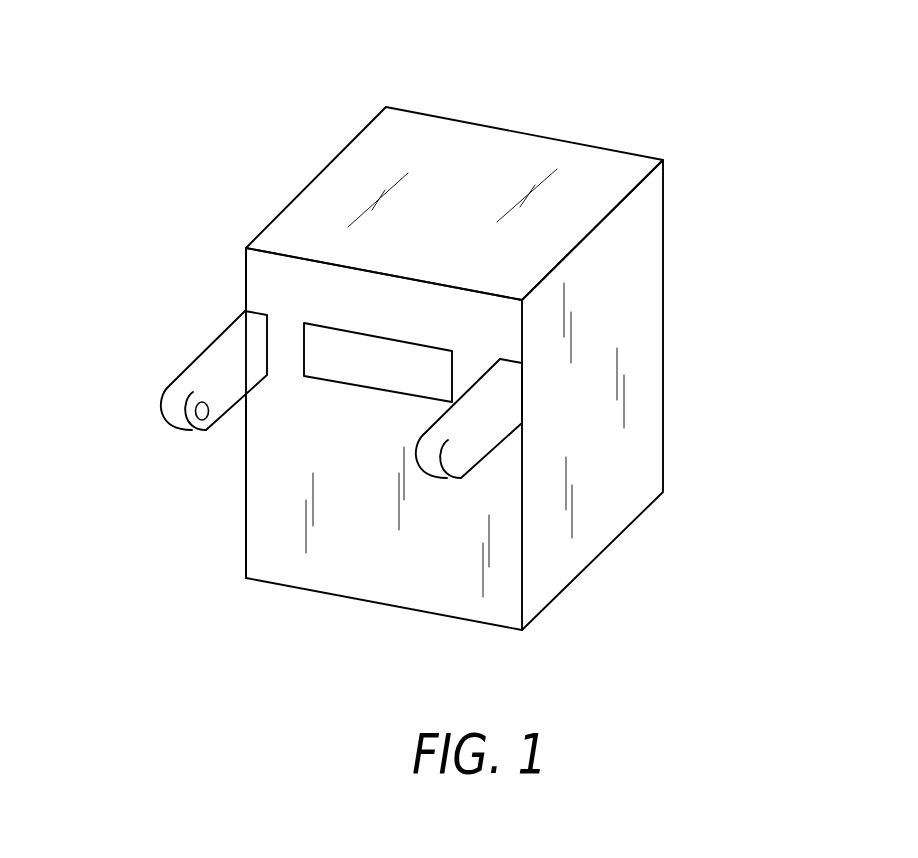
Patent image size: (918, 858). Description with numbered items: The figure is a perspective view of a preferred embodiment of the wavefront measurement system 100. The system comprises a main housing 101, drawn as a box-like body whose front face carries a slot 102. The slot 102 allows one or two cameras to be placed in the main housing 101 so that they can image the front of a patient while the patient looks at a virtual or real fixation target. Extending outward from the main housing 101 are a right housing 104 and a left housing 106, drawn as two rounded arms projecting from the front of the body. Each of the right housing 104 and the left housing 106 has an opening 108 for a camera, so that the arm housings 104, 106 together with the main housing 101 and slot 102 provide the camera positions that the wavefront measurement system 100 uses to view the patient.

The wavefront measurement system 100 is at (727, 128).
The main housing 101 is at (635, 327).
The slot 102 is at (402, 364).
The right housing 104 is at (463, 455).
The left housing 106 is at (175, 400).
The opening 108 is at (202, 413).